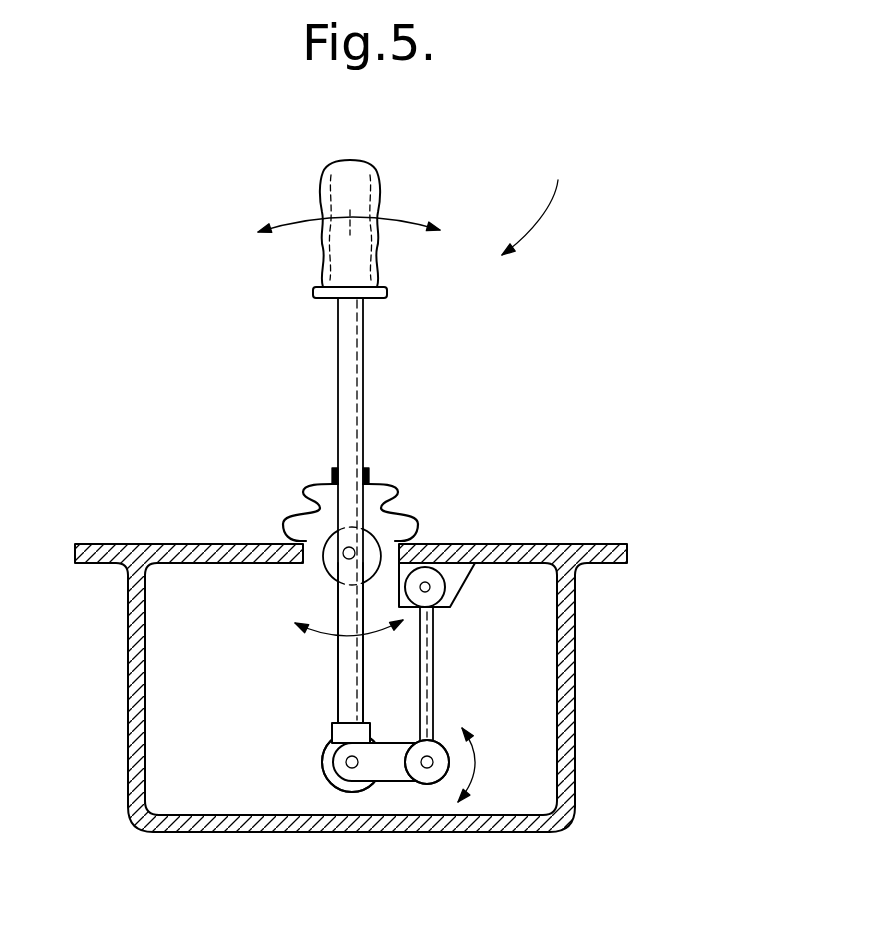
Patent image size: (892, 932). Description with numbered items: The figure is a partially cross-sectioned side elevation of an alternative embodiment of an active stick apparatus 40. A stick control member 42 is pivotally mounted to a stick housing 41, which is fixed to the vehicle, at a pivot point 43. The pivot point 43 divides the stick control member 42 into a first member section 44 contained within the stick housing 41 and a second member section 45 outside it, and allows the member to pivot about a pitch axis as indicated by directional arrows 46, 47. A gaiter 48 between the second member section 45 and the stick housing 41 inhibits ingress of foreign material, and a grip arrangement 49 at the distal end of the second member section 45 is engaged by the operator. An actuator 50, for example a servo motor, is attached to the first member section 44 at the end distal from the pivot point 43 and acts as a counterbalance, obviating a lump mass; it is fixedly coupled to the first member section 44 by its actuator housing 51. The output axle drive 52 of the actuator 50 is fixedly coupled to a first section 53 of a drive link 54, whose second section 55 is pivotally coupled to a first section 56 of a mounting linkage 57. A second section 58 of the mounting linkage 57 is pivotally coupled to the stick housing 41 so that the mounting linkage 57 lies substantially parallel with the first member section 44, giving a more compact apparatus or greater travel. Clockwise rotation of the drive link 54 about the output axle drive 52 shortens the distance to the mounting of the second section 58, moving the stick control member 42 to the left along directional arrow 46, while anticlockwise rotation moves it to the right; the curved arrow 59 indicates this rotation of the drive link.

The active stick apparatus 40 is at (539, 203).
The stick housing 41 is at (572, 677).
The stick control member 42 is at (337, 370).
The pivot point 43 is at (352, 548).
The first member section 44 is at (343, 605).
The second member section 45 is at (353, 340).
The directional arrow 46 is at (300, 220).
The directional arrow 47 is at (320, 638).
The gaiter 48 is at (300, 510).
The grip arrangement 49 is at (365, 167).
The actuator 50 is at (353, 792).
The actuator housing 51 is at (322, 762).
The output axle drive 52 is at (350, 767).
The first section of drive link 53 is at (330, 748).
The drive link 54 is at (389, 781).
The second section of drive link 55 is at (452, 748).
The first section of mounting linkage 56 is at (432, 784).
The mounting linkage 57 is at (434, 632).
The second section of mounting linkage 58 is at (426, 585).
The rotation arrow 59 is at (477, 767).